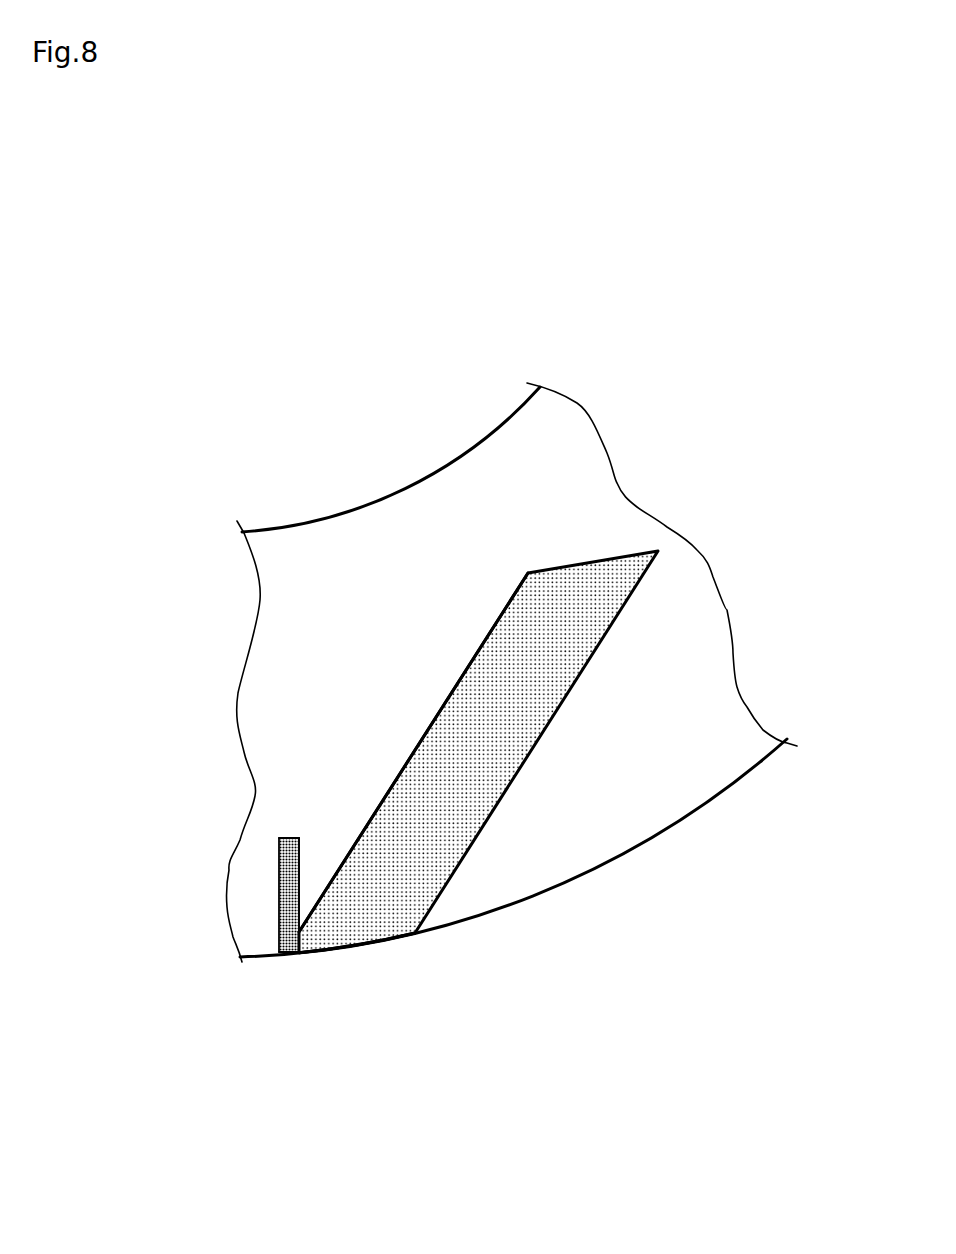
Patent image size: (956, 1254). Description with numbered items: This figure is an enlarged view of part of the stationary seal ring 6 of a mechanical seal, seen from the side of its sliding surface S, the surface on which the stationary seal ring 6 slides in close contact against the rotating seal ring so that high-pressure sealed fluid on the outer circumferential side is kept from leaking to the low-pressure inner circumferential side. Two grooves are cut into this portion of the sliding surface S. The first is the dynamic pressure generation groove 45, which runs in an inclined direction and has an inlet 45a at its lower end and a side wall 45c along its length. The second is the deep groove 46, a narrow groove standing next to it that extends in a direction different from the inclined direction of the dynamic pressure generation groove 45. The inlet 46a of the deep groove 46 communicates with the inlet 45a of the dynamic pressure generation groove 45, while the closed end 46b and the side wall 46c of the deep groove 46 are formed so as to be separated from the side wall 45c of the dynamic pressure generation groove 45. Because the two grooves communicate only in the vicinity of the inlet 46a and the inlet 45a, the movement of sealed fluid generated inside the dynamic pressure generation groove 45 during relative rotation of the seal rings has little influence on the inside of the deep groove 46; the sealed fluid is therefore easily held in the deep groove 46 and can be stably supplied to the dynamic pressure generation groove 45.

The stationary seal ring 6 is at (737, 781).
The sliding surface S is at (654, 807).
The dynamic pressure generation groove 45 is at (432, 818).
The inlet of the dynamic pressure generation groove 45a is at (377, 950).
The side wall of the dynamic pressure generation groove 45c is at (432, 730).
The deep groove 46 is at (277, 900).
The inlet of the deep groove 46a is at (290, 955).
The closed end of the deep groove 46b is at (284, 838).
The side wall of the deep groove 46c is at (300, 847).